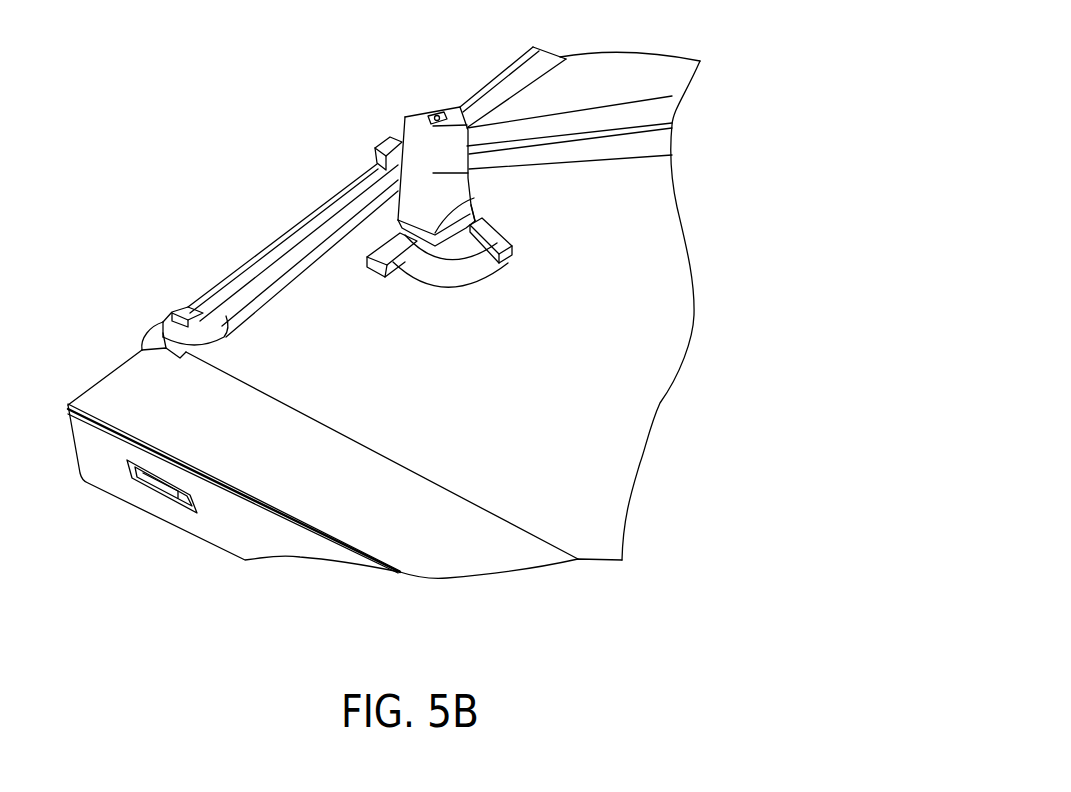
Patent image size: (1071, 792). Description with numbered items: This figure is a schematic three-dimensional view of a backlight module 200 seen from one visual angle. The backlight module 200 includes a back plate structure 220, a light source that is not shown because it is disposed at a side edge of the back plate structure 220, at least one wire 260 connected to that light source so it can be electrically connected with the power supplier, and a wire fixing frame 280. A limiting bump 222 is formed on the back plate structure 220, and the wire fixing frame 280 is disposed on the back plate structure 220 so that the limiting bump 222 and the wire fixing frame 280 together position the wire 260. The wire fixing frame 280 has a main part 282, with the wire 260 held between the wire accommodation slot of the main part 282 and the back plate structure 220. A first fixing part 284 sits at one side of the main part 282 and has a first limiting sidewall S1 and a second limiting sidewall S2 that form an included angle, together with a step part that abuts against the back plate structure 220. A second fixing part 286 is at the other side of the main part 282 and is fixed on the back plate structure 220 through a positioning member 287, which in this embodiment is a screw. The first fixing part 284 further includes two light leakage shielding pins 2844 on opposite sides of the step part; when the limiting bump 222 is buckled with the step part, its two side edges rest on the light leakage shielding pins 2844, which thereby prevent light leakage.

The backlight module 200 is at (650, 630).
The back plate structure 220 is at (657, 408).
The limiting bump 222 is at (440, 278).
The wire 260 is at (657, 142).
The wire fixing frame 280 is at (598, 177).
The main part 282 is at (468, 173).
The first fixing part 284 is at (472, 198).
The second fixing part 286 is at (468, 134).
The positioning member 287 is at (436, 113).
The light leakage shielding pins 2844 is at (372, 277).
The first limiting sidewall S1 is at (398, 225).
The second limiting sidewall S2 is at (477, 210).